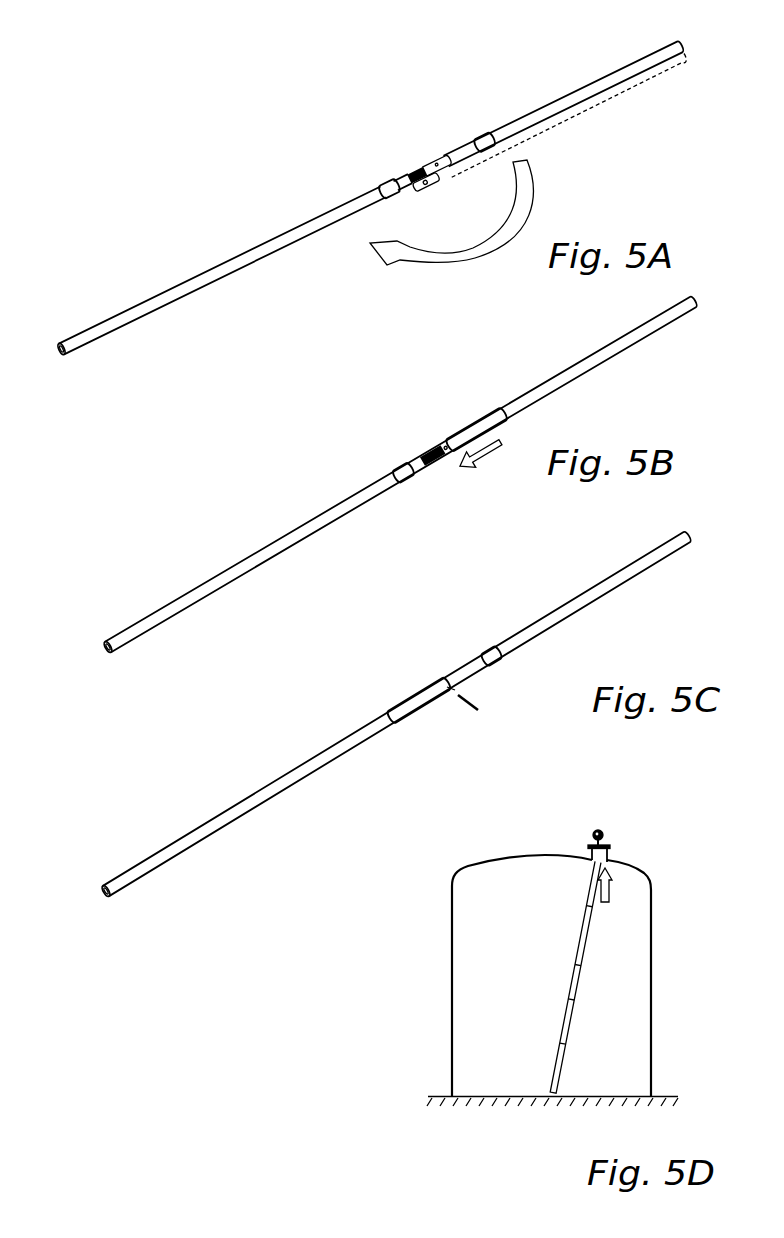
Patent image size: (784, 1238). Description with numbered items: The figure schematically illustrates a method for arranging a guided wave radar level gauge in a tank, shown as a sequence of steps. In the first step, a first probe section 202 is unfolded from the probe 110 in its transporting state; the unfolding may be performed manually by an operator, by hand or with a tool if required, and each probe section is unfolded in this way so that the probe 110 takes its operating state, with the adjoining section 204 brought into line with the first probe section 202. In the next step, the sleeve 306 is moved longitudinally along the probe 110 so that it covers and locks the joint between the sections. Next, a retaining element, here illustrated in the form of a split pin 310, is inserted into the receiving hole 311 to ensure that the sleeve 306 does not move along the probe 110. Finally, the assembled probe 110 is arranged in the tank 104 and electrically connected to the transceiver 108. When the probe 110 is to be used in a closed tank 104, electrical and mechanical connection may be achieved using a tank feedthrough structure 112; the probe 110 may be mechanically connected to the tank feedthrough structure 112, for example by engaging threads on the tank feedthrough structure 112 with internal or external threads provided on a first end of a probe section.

In FIG. 5A, the first probe section 202 is at (228, 263).
In FIG. 5A, the second probe section 204 is at (538, 112).
In FIG. 5B, the sleeve 306 is at (468, 425).
In FIG. 5C, the split pin 310 is at (463, 708).
In FIG. 5C, the receiving hole 311 is at (452, 689).
In FIG. 5D, the tank 104 is at (652, 963).
In FIG. 5D, the level gauge transceiver 108 is at (600, 831).
In FIG. 5D, the probe 110 is at (573, 972).
In FIG. 5D, the tank feedthrough structure 112 is at (610, 847).